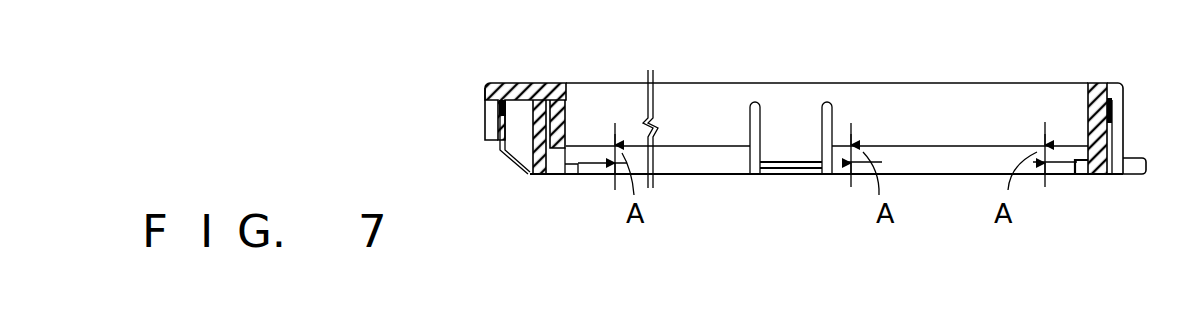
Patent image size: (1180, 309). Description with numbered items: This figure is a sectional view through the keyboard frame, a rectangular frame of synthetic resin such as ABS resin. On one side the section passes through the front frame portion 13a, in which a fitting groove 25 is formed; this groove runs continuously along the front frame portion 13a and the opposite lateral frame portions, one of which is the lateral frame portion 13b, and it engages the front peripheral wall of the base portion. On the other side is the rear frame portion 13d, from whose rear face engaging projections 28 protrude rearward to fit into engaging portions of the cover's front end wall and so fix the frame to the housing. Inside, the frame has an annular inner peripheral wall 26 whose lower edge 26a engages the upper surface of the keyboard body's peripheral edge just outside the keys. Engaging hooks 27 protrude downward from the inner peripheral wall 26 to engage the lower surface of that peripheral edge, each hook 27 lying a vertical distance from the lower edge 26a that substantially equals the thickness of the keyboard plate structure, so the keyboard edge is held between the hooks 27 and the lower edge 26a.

The front frame portion 13a is at (522, 93).
The lateral frame portion 13b is at (913, 96).
The rear frame portion 13d is at (1100, 85).
The fitting groove 25 is at (506, 146).
The inner peripheral wall 26 is at (583, 84).
The lower edge 26a is at (580, 152).
The engaging hook 27 is at (576, 176).
The engaging projection 28 is at (1132, 176).